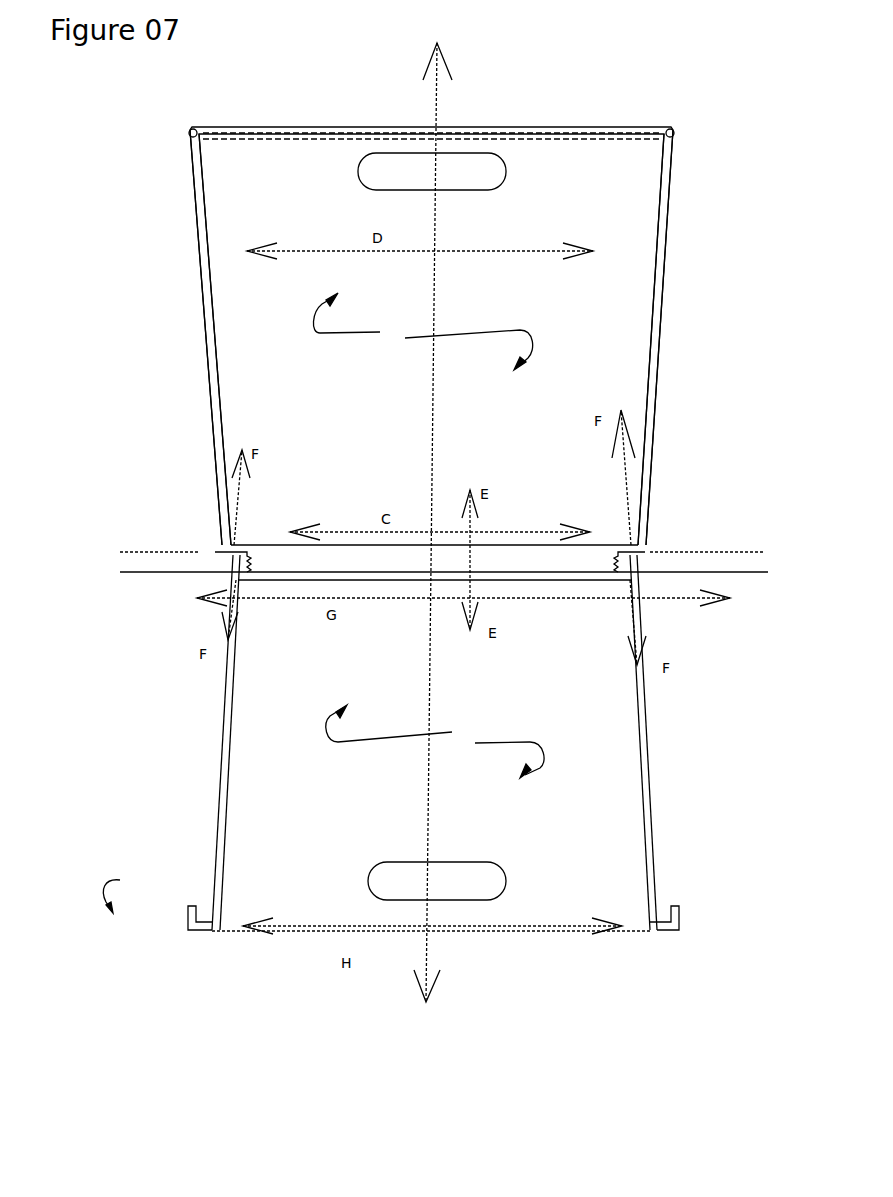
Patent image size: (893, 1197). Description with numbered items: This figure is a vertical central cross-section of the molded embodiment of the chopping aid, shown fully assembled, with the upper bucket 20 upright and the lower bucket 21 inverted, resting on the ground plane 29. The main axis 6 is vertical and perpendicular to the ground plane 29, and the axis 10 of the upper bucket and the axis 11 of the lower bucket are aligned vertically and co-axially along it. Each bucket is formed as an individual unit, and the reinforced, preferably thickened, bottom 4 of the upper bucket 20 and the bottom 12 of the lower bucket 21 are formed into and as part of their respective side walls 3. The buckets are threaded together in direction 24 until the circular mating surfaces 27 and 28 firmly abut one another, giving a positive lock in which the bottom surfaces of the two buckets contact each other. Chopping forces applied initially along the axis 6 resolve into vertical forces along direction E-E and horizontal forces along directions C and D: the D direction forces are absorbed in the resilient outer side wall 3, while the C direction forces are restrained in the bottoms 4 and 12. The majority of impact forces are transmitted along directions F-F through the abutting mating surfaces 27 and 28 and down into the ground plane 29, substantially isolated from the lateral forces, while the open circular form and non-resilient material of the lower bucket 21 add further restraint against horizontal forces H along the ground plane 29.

The side wall 3 is at (443, 336).
The bottom 4 is at (434, 521).
The axis 6 is at (433, 528).
The axis 10 is at (668, 337).
The axis 11 is at (664, 742).
The bottom 12 is at (435, 614).
The upper bucket 20 is at (188, 337).
The lower bucket 21 is at (187, 742).
The threading direction 24 is at (428, 535).
The circular mating surface 27 is at (444, 542).
The circular mating surface 28 is at (433, 780).
The ground plane 29 is at (121, 893).